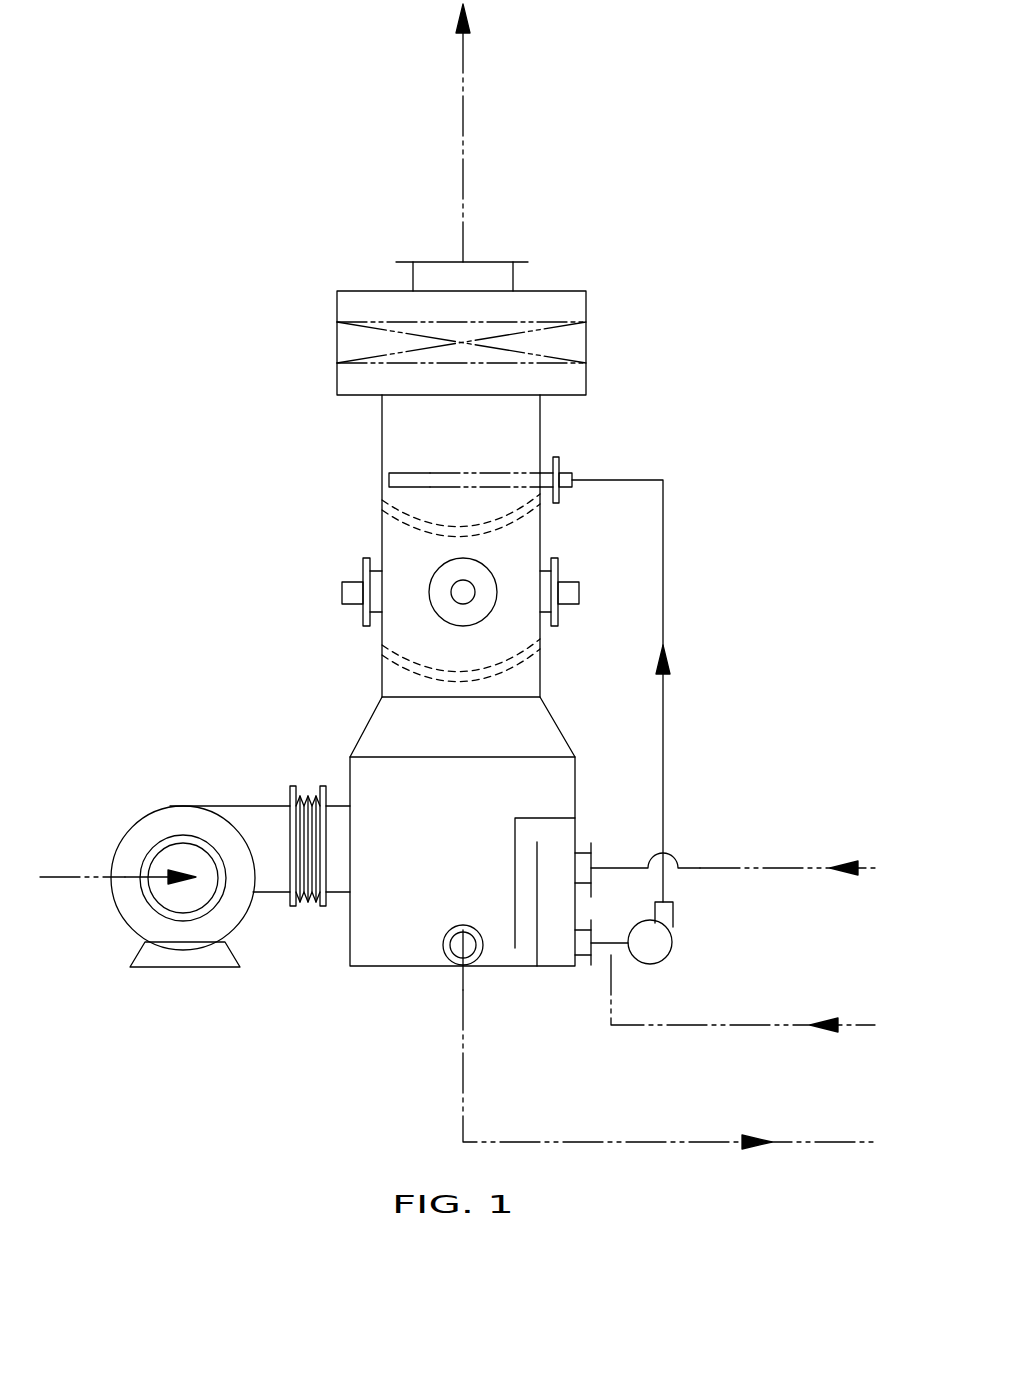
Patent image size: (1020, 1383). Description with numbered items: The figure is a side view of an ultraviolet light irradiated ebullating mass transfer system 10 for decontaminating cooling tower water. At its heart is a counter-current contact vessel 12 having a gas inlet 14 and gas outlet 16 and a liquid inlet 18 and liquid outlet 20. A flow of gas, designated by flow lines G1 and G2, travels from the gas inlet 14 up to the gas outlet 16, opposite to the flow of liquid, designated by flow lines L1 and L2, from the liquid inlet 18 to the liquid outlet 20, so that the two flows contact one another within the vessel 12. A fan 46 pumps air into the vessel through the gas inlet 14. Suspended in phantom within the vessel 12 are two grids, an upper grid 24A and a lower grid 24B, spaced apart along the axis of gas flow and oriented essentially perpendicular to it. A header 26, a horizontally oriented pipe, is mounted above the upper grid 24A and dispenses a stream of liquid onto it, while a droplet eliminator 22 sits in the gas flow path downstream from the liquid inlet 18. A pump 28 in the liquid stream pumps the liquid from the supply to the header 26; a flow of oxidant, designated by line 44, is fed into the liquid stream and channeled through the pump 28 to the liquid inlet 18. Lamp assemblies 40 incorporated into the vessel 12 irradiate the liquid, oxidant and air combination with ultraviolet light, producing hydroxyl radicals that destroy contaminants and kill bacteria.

The mass transfer system 10 is at (803, 430).
The contact vessel 12 is at (365, 722).
The gas inlet 14 is at (343, 806).
The gas outlet 16 is at (500, 277).
The liquid inlet 18 is at (562, 467).
The liquid outlet 20 is at (470, 960).
The droplet eliminator 22 is at (565, 336).
The upper grid 24A is at (540, 507).
The lower grid 24B is at (540, 655).
The header 26 is at (392, 472).
The pump 28 is at (678, 928).
The lamp assemblies 40 is at (362, 592).
The oxidant line 44 is at (706, 1025).
The fan 46 is at (177, 840).
The gas flow line G1 is at (63, 868).
The gas flow line G2 is at (463, 108).
The liquid flow line L1 is at (612, 480).
The liquid flow line L2 is at (460, 1050).